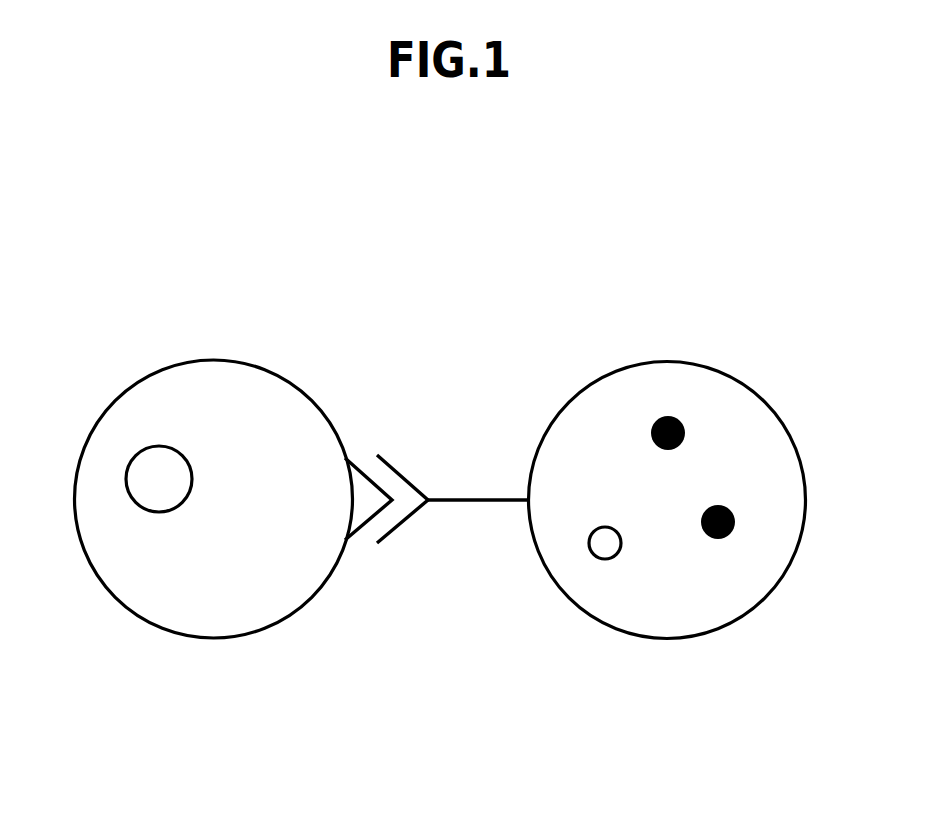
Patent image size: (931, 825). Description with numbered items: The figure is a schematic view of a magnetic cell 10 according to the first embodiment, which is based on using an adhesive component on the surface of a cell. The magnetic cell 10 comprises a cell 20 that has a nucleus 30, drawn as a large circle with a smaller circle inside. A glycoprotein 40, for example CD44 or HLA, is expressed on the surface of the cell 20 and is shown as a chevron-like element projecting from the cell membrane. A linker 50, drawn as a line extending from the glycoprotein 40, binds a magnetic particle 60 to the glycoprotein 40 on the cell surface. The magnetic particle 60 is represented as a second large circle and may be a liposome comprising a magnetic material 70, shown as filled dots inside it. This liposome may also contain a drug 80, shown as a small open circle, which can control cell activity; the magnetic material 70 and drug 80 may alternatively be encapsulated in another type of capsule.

The magnetic cell 10 is at (492, 268).
The cell 20 is at (257, 583).
The nucleus 30 is at (152, 485).
The glycoprotein 40 is at (367, 492).
The linker 50 is at (470, 502).
The magnetic particle 60 is at (673, 592).
The magnetic material 70 is at (715, 504).
The drug 80 is at (605, 559).